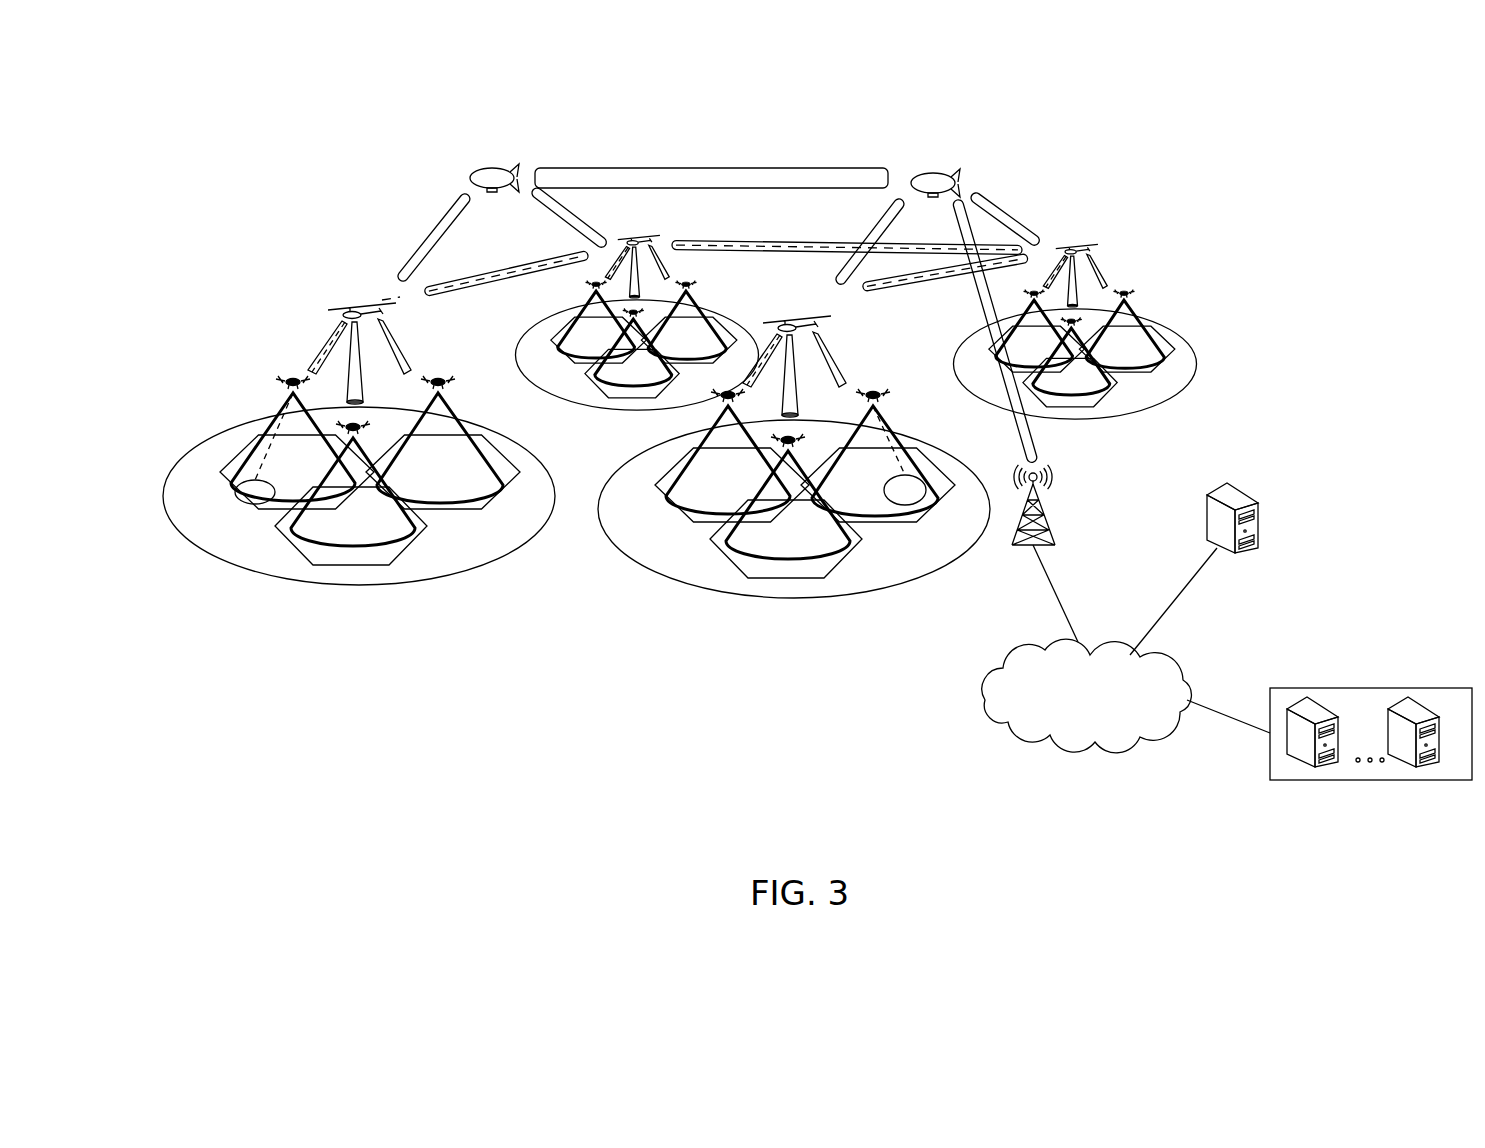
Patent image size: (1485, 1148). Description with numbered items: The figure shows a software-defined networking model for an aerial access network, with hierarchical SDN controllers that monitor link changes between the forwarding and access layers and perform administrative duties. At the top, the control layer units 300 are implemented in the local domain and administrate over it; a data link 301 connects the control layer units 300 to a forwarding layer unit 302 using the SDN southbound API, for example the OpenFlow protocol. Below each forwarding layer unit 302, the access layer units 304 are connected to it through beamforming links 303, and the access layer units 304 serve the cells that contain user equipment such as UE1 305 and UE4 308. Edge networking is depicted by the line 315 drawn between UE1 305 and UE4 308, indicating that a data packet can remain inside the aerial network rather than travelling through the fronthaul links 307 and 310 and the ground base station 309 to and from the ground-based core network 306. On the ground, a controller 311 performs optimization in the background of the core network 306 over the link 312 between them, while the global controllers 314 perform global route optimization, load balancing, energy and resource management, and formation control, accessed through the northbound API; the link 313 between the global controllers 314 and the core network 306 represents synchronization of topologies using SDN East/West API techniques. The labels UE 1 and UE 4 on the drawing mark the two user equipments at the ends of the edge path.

The control layer unit 300 is at (492, 168).
The data link 301 is at (433, 232).
The forwarding layer unit 302 is at (333, 307).
The beamforming link 303 is at (323, 342).
The access layer unit 304 is at (277, 382).
The UE1 305 is at (230, 487).
The core network 306 is at (712, 168).
The fronthaul link 307 is at (1032, 435).
The UE4 308 is at (900, 510).
The ground base station 309 is at (1048, 512).
The fronthaul link 310 is at (1048, 575).
The controller 311 is at (1258, 523).
The link 312 is at (1178, 597).
The link 313 is at (1227, 713).
The global controller 314 is at (1367, 688).
The line 315 is at (940, 246).
The UE1 UE 1 is at (255, 503).
The UE4 UE 4 is at (905, 500).